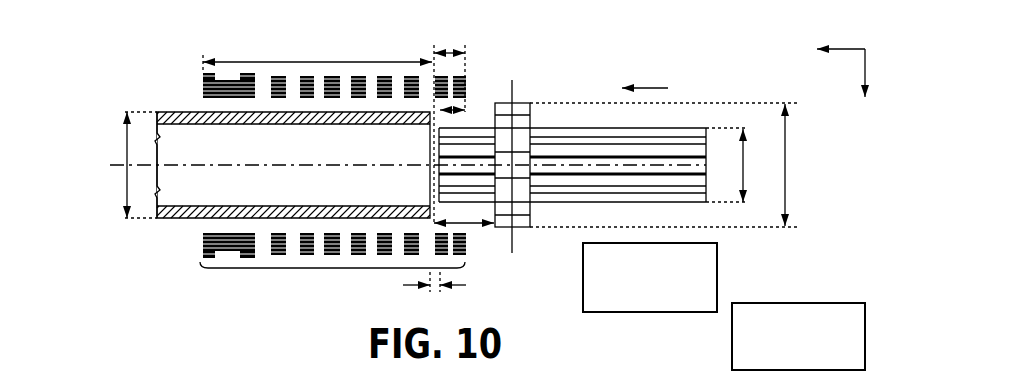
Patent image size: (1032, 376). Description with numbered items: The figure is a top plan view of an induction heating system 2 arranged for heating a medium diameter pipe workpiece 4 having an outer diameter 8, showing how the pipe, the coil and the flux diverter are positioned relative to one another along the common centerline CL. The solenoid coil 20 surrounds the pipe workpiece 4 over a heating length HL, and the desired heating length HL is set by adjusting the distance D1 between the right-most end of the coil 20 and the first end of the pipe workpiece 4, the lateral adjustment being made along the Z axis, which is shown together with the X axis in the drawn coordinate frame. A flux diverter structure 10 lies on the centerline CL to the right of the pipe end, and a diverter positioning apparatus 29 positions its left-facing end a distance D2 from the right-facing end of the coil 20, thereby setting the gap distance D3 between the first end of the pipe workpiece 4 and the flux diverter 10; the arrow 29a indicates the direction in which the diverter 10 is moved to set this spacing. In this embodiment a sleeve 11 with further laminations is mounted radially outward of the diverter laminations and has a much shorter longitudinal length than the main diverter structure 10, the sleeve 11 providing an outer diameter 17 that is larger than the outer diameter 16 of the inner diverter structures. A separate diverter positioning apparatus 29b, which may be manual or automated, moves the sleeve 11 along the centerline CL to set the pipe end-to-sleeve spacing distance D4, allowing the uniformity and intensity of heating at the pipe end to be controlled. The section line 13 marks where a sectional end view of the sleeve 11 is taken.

The induction heating system 2 is at (105, 62).
The pipe workpiece 4 is at (172, 112).
The outer diameter 8 is at (127, 136).
The flux diverter structure 10 is at (690, 122).
The sleeve 11 is at (537, 118).
The section line through sleeve 13 is at (512, 80).
The outer diameter 16 is at (743, 150).
The outer diameter 17 is at (786, 149).
The solenoid coil 20 is at (335, 268).
The diverter positioning apparatus 29 is at (865, 339).
The arrow 29a is at (650, 88).
The diverter positioning apparatus 29b is at (717, 279).
The heating length HL is at (313, 62).
The distance D1 is at (455, 53).
The distance D2 is at (455, 108).
The gap distance D3 is at (466, 286).
The spacing distance D4 is at (468, 228).
The centerline CL is at (114, 165).
The Z axis Z is at (834, 50).
The X axis X is at (868, 87).